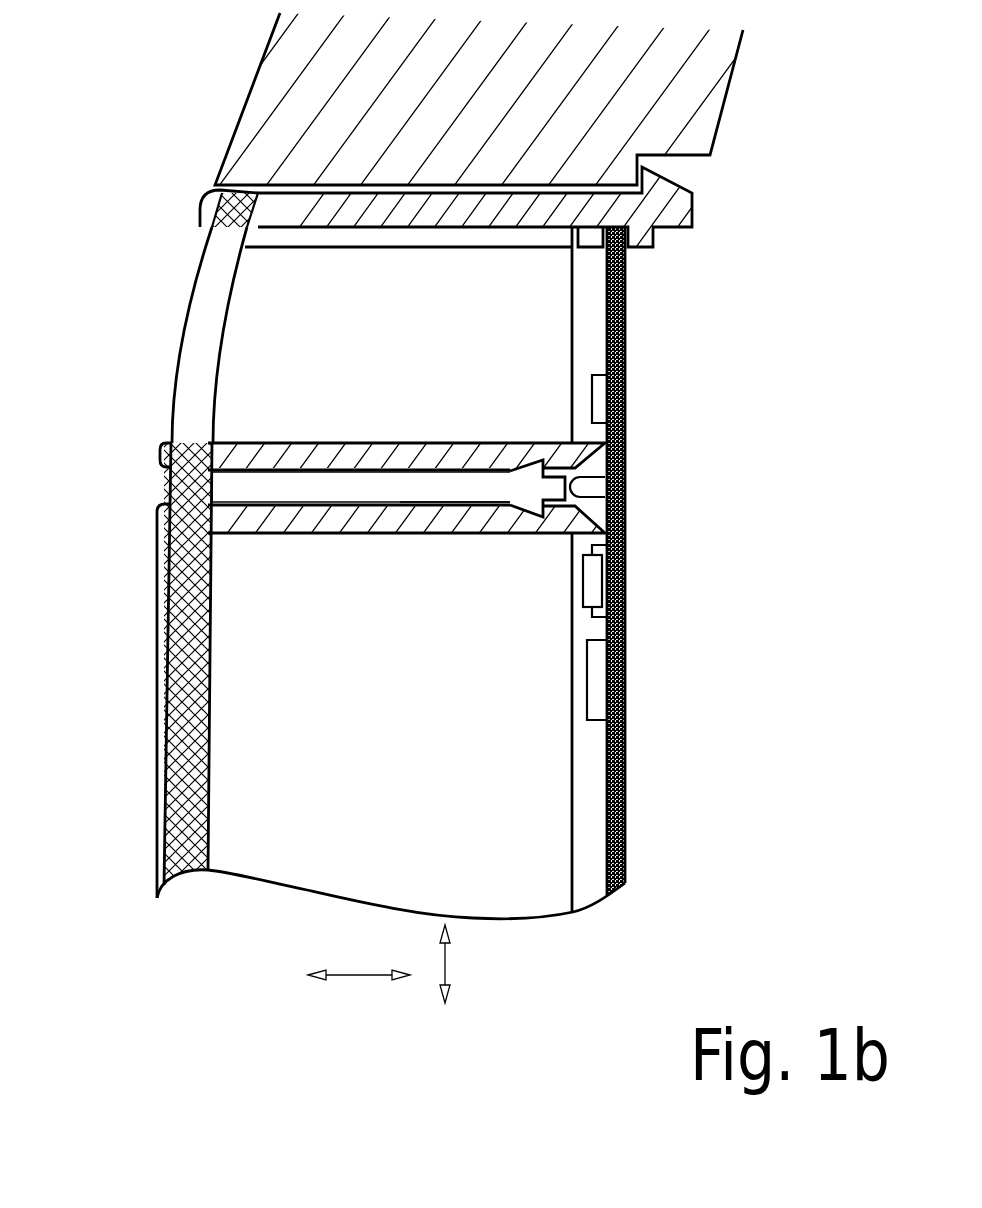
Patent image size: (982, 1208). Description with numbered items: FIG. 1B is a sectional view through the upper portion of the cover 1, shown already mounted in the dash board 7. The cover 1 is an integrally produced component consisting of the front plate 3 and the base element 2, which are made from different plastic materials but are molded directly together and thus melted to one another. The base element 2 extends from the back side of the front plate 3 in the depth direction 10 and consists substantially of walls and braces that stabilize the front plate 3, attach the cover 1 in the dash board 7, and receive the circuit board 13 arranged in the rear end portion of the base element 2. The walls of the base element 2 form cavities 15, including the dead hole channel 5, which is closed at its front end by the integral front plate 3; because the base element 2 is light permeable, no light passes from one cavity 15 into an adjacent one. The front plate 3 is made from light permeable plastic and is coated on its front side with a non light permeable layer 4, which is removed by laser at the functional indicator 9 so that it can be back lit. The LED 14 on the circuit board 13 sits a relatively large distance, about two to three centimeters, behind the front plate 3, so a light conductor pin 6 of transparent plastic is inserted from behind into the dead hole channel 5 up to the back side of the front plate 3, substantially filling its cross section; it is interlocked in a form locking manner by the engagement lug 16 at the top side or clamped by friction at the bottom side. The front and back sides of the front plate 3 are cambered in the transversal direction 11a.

The cover 1 is at (130, 400).
The base element 2 is at (663, 213).
The front plate 3 is at (210, 769).
The non light permeable layer 4 is at (203, 217).
The dead hole channel 5 is at (450, 503).
The light conductor pin 6 is at (361, 487).
The dash board 7 is at (515, 102).
The functional indicator 9 is at (142, 485).
The depth direction 10 is at (357, 975).
The transversal direction 11a is at (445, 967).
The circuit board 13 is at (622, 653).
The LED 14 is at (596, 487).
The cavity 15 is at (391, 573).
The engagement lug 16 is at (536, 507).